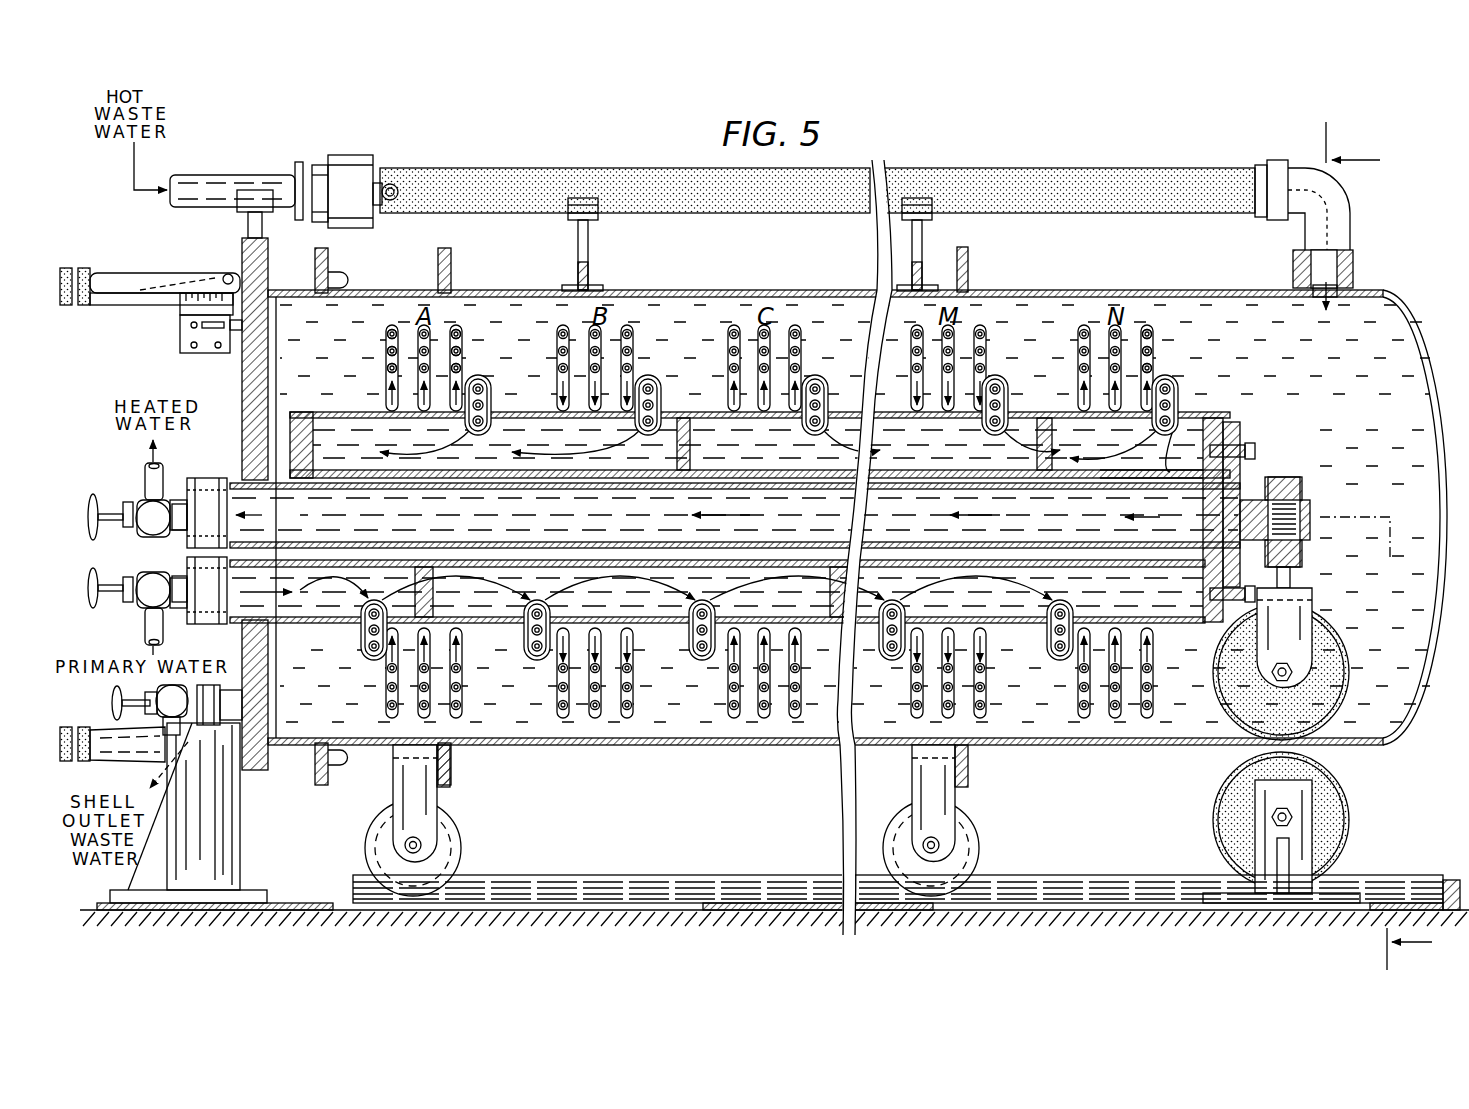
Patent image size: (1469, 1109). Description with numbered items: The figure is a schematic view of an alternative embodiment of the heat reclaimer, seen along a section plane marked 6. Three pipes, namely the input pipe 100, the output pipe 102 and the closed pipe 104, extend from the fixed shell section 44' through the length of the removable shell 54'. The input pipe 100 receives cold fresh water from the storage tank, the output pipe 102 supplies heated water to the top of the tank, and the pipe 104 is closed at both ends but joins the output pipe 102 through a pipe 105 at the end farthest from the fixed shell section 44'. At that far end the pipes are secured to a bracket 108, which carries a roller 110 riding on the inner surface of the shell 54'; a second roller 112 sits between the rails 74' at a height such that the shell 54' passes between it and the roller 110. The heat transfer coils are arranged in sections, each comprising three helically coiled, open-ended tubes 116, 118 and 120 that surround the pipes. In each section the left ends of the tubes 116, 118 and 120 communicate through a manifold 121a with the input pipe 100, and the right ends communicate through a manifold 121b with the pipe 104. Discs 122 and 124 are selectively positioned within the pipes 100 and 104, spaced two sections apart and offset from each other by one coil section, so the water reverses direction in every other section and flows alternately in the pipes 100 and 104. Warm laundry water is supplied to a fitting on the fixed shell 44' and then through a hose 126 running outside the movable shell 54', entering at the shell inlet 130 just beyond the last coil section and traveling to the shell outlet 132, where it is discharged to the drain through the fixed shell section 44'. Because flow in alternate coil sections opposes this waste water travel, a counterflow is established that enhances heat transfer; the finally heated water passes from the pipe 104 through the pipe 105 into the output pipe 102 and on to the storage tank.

The hose 126 is at (556, 158).
The removable shell 54' is at (857, 523).
The shell inlet 130 is at (1336, 284).
The section line 6- 6 is at (1379, 548).
The helically coiled tube 120 is at (389, 331).
The helically coiled tube 118 is at (389, 350).
The helically coiled tube 116 is at (389, 368).
The manifold 121b is at (489, 384).
The disc 124 is at (695, 399).
The pipe 105 is at (1172, 472).
The bracket 108 is at (1248, 462).
The fixed shell section 44' is at (218, 480).
The pipe 104 is at (368, 460).
The output pipe 102 is at (705, 513).
The input pipe 100 is at (687, 590).
The disc 122 is at (530, 580).
The manifold 121a is at (368, 661).
The roller 110 is at (1336, 624).
The roller 112 is at (1349, 822).
The rails 74' is at (906, 879).
The shell outlet 132 is at (249, 762).